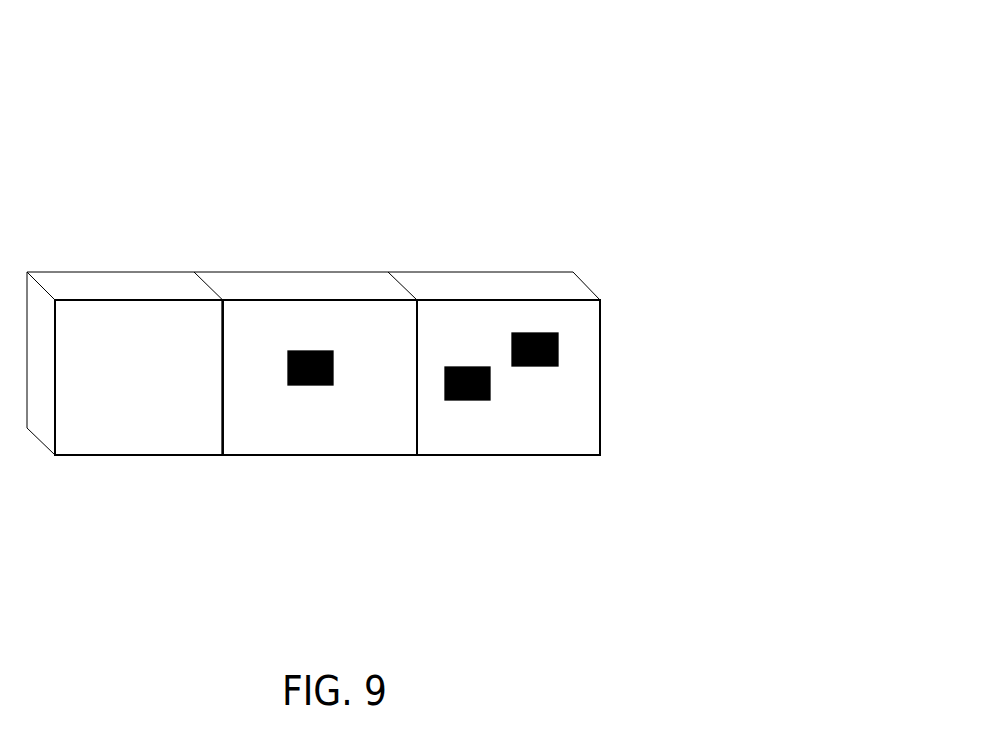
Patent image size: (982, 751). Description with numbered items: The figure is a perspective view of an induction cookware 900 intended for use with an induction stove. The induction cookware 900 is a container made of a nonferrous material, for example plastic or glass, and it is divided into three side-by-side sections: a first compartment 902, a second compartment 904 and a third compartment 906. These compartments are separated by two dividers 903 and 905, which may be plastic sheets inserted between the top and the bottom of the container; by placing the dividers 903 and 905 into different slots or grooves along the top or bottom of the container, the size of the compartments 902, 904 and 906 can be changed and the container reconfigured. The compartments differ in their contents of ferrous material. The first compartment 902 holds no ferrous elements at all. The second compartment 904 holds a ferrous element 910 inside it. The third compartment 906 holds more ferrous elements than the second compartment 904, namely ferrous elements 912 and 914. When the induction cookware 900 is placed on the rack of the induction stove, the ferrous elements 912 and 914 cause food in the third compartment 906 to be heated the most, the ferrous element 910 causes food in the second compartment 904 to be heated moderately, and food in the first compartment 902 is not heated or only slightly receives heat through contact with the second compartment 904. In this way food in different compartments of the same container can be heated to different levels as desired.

The induction cookware 900 is at (305, 160).
The first compartment 902 is at (138, 411).
The divider 903 is at (223, 410).
The second compartment 904 is at (333, 411).
The divider 905 is at (417, 410).
The third compartment 906 is at (528, 398).
The ferrous element 910 is at (312, 350).
The ferrous element 912 is at (465, 367).
The ferrous element 914 is at (536, 333).